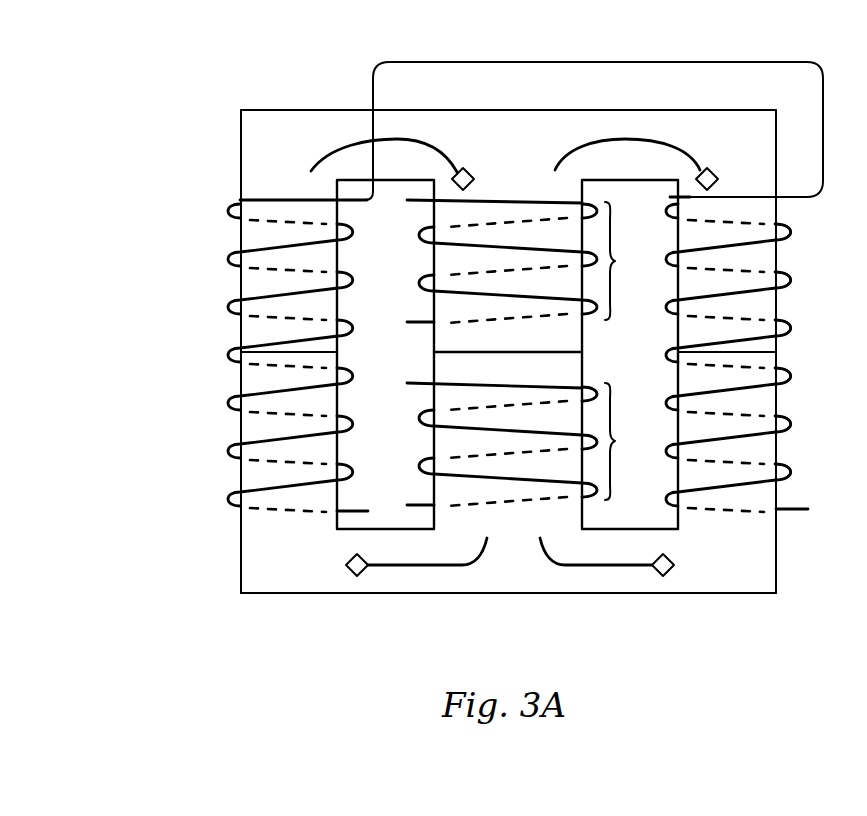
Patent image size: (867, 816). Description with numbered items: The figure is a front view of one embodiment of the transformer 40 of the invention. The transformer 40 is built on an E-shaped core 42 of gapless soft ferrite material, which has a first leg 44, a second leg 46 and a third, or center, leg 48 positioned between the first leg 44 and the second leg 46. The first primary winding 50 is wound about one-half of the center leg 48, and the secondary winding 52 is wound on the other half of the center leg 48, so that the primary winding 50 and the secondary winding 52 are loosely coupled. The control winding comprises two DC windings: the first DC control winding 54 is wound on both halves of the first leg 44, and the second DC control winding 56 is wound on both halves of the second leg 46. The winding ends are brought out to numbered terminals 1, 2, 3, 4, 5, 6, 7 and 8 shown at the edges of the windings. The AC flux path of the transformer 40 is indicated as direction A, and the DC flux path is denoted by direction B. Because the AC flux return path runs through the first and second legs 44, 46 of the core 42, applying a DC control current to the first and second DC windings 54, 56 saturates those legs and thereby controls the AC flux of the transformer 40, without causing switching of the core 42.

The transformer 40 is at (580, 48).
The E-shaped core 42 is at (306, 563).
The first leg 44 is at (282, 517).
The second leg 46 is at (712, 533).
The center leg 48 is at (477, 520).
The first primary winding 50 is at (507, 198).
The secondary winding 52 is at (517, 478).
The first DC control winding 54 is at (229, 403).
The second DC control winding 56 is at (792, 270).
The terminal 1 is at (494, 211).
The terminal 2 is at (419, 312).
The terminal 3 is at (493, 374).
The terminal 4 is at (419, 496).
The terminal 5 is at (354, 500).
The terminal 6 is at (303, 211).
The terminal 7 is at (793, 498).
The terminal 8 is at (739, 186).
The AC flux path direction A is at (420, 568).
The DC flux path direction B is at (309, 167).